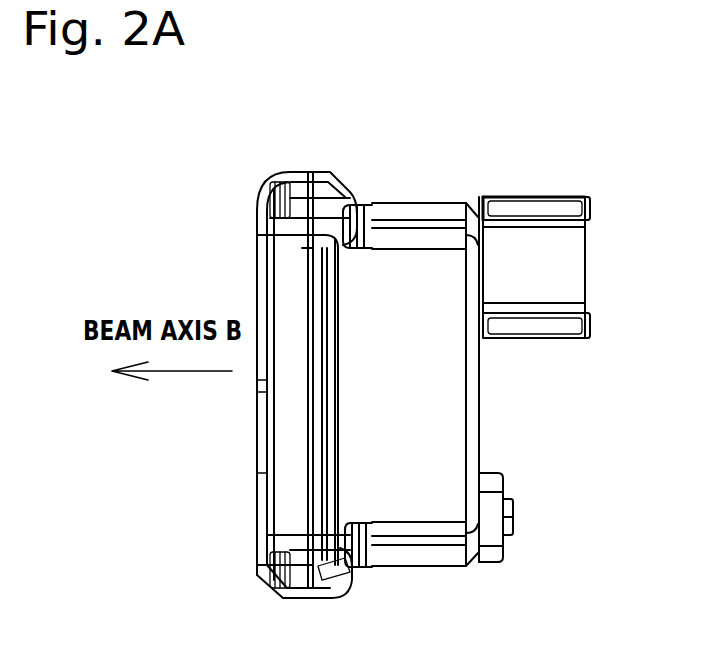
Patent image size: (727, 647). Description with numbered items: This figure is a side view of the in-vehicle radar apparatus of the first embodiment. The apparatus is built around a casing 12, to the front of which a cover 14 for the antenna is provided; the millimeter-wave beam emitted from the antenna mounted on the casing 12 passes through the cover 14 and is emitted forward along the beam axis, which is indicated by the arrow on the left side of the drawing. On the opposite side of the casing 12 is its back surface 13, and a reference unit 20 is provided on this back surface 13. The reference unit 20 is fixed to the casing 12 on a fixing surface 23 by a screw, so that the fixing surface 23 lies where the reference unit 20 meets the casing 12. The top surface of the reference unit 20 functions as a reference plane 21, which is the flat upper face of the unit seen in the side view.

The casing 12 is at (423, 503).
The back surface 13 is at (417, 366).
The cover 14 is at (257, 462).
The reference unit 20 is at (535, 211).
The reference plane 21 is at (555, 168).
The fixing surface 23 is at (472, 166).